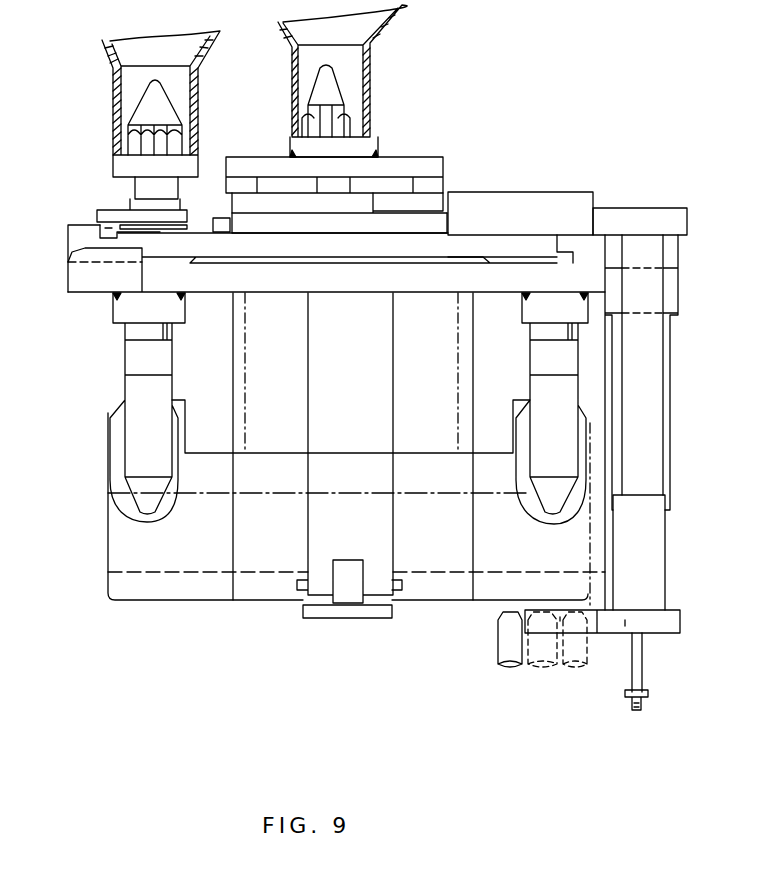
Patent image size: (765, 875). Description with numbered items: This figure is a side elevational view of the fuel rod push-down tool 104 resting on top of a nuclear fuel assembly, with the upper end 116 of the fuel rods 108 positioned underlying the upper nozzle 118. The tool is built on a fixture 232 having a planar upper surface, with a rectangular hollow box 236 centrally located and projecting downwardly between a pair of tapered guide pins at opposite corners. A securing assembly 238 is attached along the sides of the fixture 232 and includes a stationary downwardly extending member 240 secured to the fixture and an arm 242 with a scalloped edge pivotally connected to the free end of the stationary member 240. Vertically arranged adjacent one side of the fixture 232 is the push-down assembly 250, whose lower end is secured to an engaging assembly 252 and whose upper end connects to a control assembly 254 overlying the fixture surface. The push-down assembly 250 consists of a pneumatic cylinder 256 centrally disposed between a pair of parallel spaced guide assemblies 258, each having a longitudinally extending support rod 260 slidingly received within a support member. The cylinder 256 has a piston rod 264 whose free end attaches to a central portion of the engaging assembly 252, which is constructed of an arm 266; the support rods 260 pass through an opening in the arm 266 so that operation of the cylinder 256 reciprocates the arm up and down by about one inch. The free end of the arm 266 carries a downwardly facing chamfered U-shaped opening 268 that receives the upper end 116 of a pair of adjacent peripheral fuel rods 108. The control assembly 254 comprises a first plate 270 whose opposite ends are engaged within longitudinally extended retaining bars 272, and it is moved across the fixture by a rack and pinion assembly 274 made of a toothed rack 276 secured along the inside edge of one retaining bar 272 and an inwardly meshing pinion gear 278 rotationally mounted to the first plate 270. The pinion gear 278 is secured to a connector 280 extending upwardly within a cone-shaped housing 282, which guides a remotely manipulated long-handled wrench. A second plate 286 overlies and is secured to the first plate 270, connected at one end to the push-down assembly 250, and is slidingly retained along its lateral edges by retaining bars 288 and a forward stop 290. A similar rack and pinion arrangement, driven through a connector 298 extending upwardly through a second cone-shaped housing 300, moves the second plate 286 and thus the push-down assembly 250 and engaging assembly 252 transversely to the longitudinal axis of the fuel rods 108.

The fuel rod push-down tool 104 is at (478, 184).
The fuel rods 108 is at (580, 650).
The upper end of the fuel rods 116 is at (502, 618).
The upper nozzle 118 is at (133, 547).
The fixture 232 is at (172, 280).
The rectangular hollow box 236 is at (238, 350).
The securing assembly 238 is at (370, 385).
The stationary member 240 is at (323, 397).
The arm 242 is at (367, 612).
The push-down assembly 250 is at (673, 352).
The engaging assembly 252 is at (680, 626).
The control assembly 254 is at (378, 132).
The pneumatic cylinder 256 is at (668, 382).
The guide assemblies 258 is at (640, 553).
The support rod 260 is at (642, 662).
The piston rod 264 is at (645, 450).
The arm 266 is at (643, 623).
The chamfered U-shaped opening 268 is at (547, 678).
The first plate 270 is at (532, 245).
The retaining bars 272 is at (73, 242).
The rack and pinion assembly 274 is at (108, 203).
The toothed rack 276 is at (100, 217).
The pinion gear 278 is at (200, 203).
The connector 280 is at (165, 105).
The cone-shaped housing 282 is at (110, 53).
The second plate 286 is at (433, 227).
The retaining bars 288 is at (365, 198).
The forward stop 290 is at (218, 232).
The connector 298 is at (330, 83).
The cone-shaped housing 300 is at (377, 72).